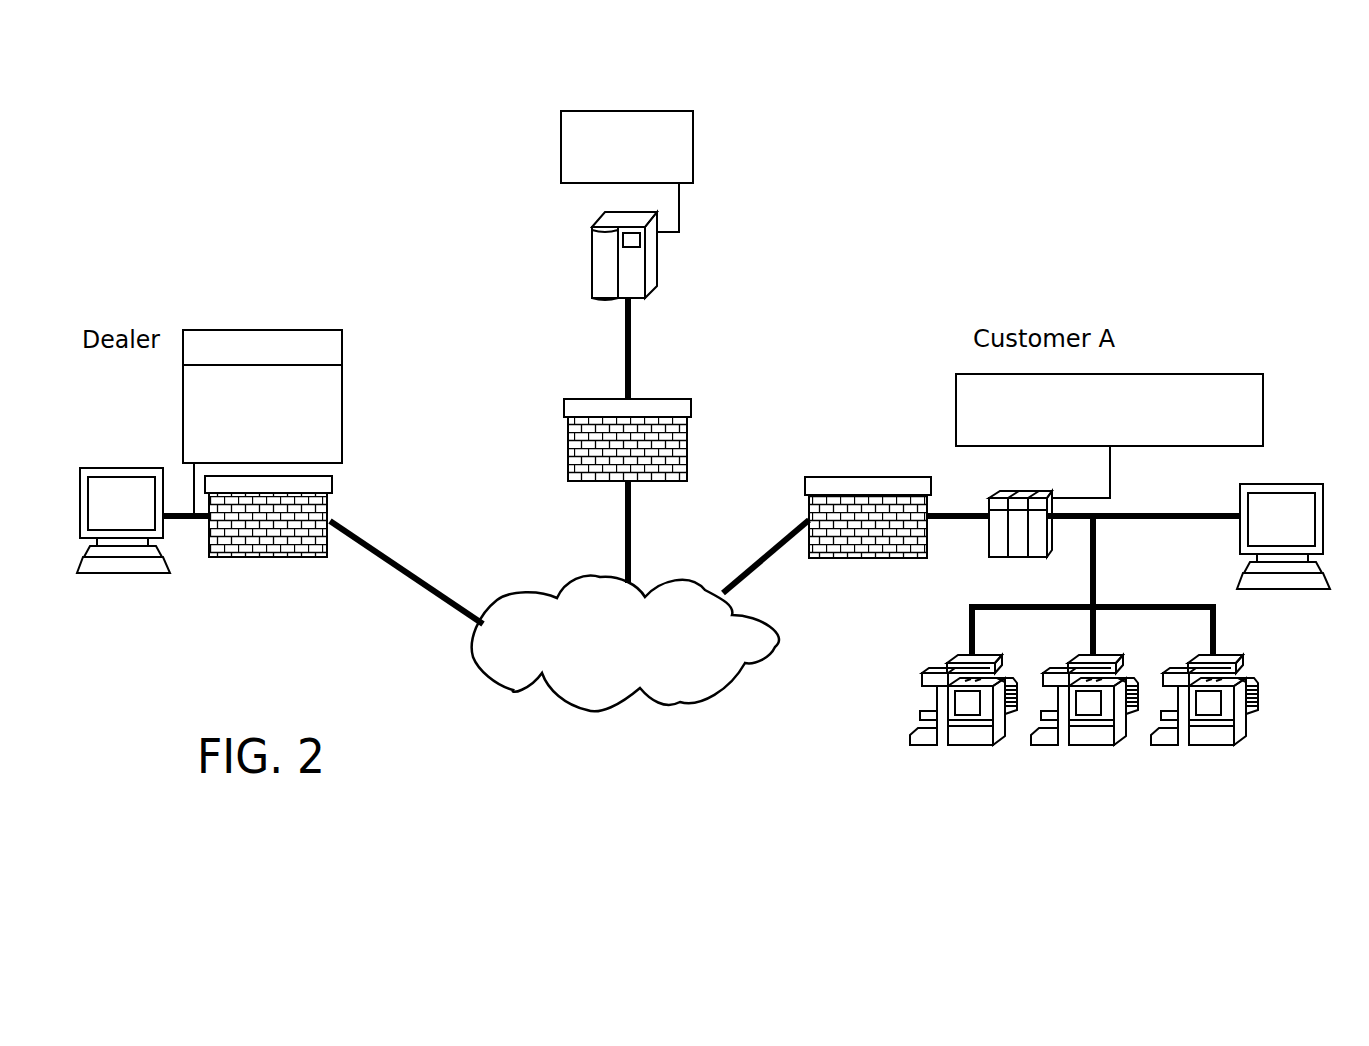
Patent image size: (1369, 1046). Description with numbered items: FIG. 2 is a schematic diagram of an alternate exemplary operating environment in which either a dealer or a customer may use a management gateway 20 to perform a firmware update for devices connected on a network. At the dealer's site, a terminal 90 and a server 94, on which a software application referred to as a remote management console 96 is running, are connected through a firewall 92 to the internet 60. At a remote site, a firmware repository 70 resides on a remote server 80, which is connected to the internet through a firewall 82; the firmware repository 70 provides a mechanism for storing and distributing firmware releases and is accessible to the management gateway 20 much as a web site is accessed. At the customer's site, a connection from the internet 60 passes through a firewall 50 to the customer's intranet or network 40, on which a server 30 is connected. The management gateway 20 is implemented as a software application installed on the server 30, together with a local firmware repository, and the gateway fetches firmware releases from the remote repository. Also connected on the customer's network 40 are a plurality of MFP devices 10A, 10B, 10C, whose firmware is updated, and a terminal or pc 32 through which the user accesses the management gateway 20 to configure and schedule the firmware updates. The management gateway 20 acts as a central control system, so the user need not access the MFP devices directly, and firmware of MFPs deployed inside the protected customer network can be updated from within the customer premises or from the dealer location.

The electronic device 10A is at (971, 737).
The electronic device 10B is at (1092, 737).
The electronic device 10C is at (1213, 737).
The management gateway 20 is at (1120, 448).
The server 30 is at (1005, 557).
The terminal or pc 32 is at (1283, 580).
The network 40 is at (1095, 571).
The firewall 50 is at (868, 477).
The internet connection 60 is at (743, 583).
The firmware repository 70 is at (561, 142).
The remote server 80 is at (657, 262).
The firewall 82 is at (689, 445).
The terminal 90 is at (123, 562).
The firewall 92 is at (270, 557).
The server 94 is at (280, 330).
The remote management console 96 is at (338, 397).